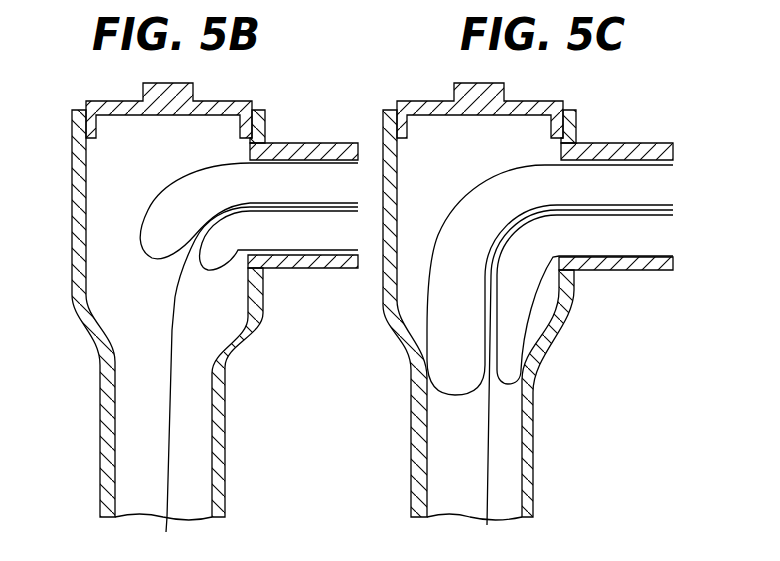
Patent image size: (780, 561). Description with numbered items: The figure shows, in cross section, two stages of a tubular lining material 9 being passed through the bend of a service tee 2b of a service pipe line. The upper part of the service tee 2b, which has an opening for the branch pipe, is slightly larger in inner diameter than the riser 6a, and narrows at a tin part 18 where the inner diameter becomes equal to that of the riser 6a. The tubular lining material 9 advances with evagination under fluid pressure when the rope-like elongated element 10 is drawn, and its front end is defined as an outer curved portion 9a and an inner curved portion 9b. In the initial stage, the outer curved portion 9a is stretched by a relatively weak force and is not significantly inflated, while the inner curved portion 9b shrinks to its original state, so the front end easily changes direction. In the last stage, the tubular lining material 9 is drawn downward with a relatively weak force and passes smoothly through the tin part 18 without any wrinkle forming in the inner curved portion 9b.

In FIG. 5B, the service tee 2b is at (266, 392).
In FIG. 5C, the service tee 2b is at (581, 393).
In FIG. 5B, the riser 6a is at (223, 477).
In FIG. 5C, the riser 6a is at (533, 483).
In FIG. 5B, the tubular lining material 9 is at (307, 203).
In FIG. 5C, the tubular lining material 9 is at (618, 207).
In FIG. 5B, the outer curved portion 9a is at (160, 187).
In FIG. 5C, the outer curved portion 9a is at (470, 197).
In FIG. 5B, the inner curved portion 9b is at (222, 270).
In FIG. 5C, the inner curved portion 9b is at (525, 340).
In FIG. 5B, the rope-like elongated element 10 is at (170, 322).
In FIG. 5C, the rope-like elongated element 10 is at (487, 490).
In FIG. 5B, the tin part 18 is at (88, 337).
In FIG. 5C, the tin part 18 is at (412, 365).